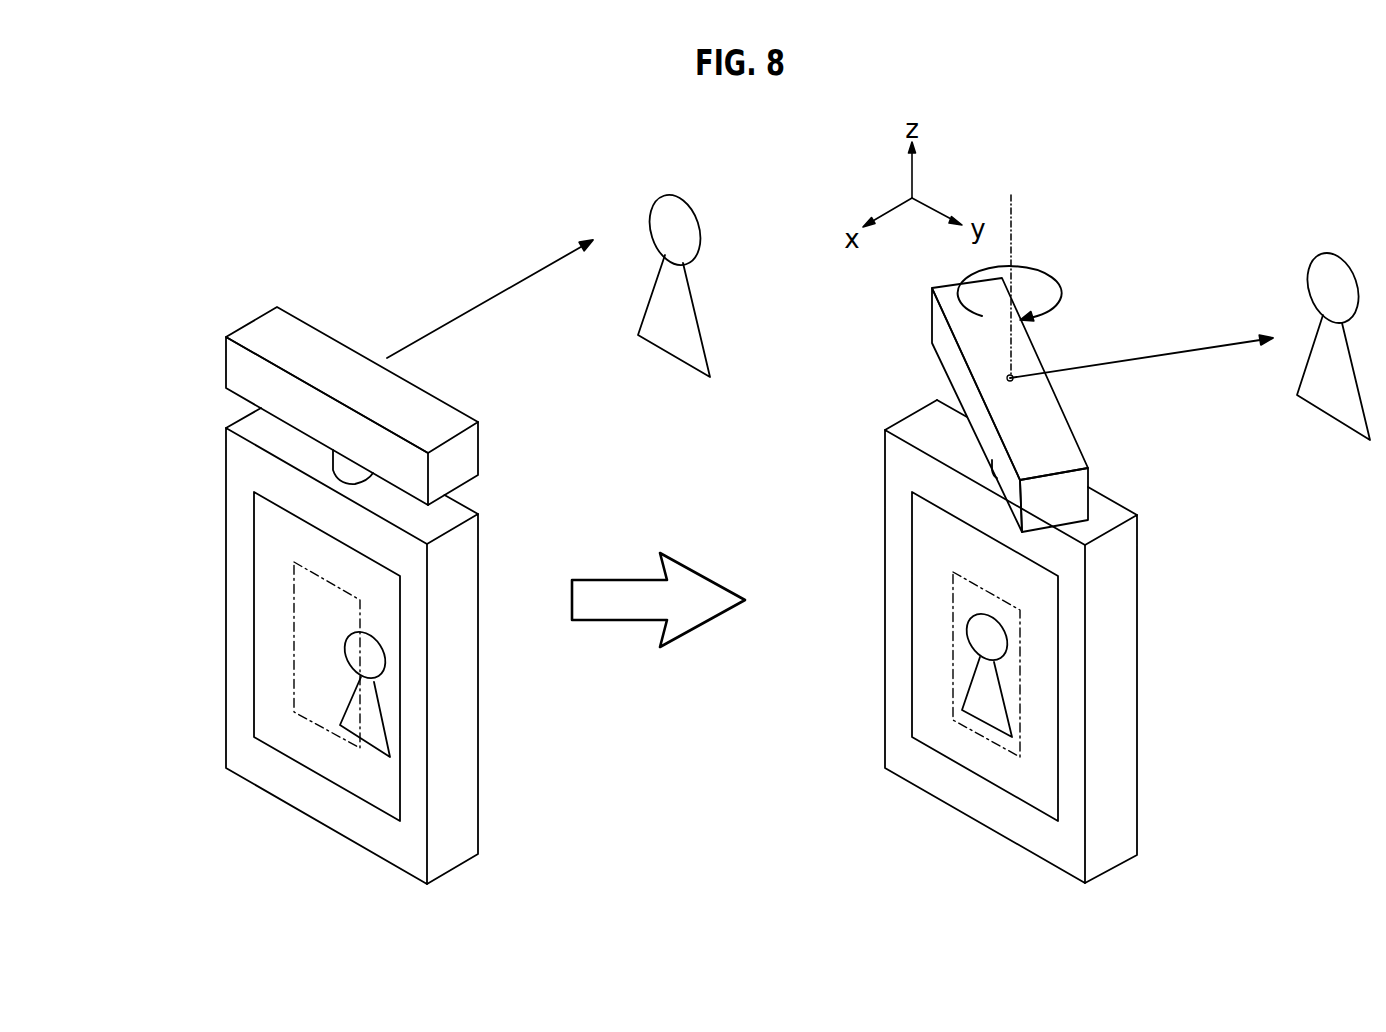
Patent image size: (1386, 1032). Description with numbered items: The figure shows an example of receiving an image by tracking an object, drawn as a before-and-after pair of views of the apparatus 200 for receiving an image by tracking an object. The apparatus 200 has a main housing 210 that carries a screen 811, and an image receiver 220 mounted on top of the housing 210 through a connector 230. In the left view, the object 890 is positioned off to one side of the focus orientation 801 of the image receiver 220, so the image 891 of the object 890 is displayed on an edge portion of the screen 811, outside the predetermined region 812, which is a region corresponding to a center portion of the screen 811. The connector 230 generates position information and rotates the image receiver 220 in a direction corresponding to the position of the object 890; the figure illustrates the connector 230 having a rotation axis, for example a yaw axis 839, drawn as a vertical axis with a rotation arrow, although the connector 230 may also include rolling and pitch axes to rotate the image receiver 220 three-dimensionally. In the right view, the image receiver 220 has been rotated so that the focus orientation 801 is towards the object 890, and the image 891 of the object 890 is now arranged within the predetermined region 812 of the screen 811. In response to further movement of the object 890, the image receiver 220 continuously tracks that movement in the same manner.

The apparatus for receiving an image by tracking an object 200 is at (223, 275).
The main body / housing 210 is at (227, 617).
The image receiver 220 is at (227, 363).
The connector 230 is at (353, 472).
The focus orientation 801 is at (480, 302).
The screen 811 is at (254, 703).
The predetermined region 812 is at (330, 730).
The yaw axis 839 is at (1012, 217).
The object 890 is at (655, 195).
The image of the object 891 is at (382, 718).